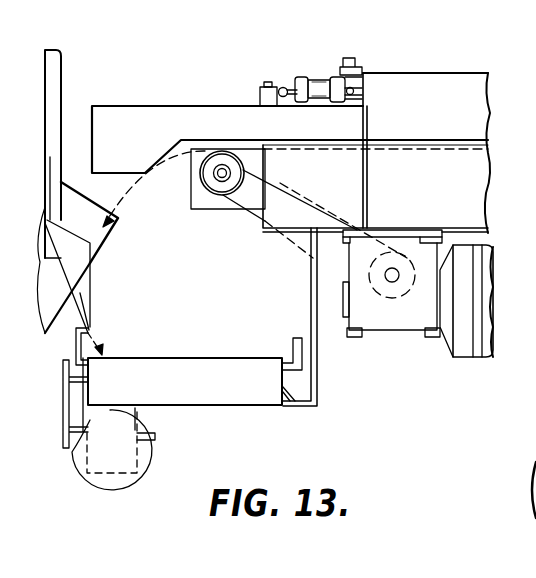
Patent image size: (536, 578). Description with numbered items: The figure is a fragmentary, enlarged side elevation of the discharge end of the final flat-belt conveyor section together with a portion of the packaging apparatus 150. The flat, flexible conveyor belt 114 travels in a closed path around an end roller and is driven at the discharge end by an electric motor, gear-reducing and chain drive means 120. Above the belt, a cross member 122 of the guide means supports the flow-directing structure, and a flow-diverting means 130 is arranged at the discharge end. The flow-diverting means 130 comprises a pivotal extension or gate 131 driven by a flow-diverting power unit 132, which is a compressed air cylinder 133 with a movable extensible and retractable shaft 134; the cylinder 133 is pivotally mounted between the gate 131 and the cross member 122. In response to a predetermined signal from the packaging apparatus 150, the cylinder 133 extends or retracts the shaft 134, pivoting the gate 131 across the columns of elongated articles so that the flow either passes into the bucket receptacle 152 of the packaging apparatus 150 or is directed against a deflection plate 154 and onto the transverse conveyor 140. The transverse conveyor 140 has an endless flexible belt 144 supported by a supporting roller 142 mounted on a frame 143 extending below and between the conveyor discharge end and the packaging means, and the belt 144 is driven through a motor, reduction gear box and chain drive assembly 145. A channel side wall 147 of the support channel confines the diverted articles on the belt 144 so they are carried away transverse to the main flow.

The conveyor belt 114 is at (218, 196).
The electric motor, gear-reducing and chain drive means 120 is at (382, 312).
The cross member 122 is at (362, 91).
The flow-diverting means 130 is at (115, 97).
The pivotal extension or gate 131 is at (150, 105).
The flow-diverting power unit 132 is at (308, 65).
The compressed air cylinder 133 is at (320, 84).
The extensible and retractable shaft 134 is at (282, 88).
The transverse conveyor 140 is at (237, 412).
The supporting roller 142 is at (285, 390).
The frame 143 is at (317, 383).
The endless flexible belt 144 is at (240, 357).
The motor, reduction gear box and chain drive assembly 145 is at (147, 458).
The channel side wall 147 is at (82, 344).
The packaging apparatus 150 is at (178, 256).
The bucket receptacle 152 is at (113, 232).
The deflection plate 154 is at (91, 284).